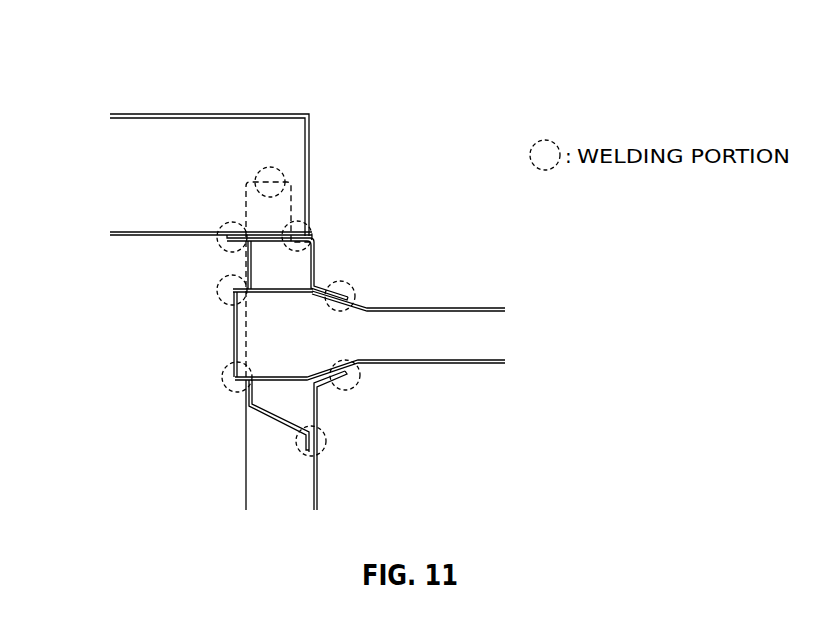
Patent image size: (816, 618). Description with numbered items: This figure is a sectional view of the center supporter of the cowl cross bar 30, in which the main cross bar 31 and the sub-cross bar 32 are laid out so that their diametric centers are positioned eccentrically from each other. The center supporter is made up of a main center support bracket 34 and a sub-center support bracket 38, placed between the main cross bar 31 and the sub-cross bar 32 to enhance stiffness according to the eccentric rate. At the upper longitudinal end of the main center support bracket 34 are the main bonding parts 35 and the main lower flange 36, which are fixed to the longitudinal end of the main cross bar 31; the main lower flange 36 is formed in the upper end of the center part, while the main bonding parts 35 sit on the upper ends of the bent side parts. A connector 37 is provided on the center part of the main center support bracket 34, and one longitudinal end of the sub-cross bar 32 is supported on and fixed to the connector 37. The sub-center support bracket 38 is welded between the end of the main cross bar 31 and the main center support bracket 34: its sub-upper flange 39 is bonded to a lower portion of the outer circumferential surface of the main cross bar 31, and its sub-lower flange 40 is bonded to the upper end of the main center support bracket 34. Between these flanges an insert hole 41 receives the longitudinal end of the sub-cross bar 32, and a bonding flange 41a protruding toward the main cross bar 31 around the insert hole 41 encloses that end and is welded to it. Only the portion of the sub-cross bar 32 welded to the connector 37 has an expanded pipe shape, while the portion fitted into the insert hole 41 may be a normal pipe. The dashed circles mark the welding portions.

The cowl cross bar 30 is at (103, 92).
The main cross bar 31 is at (167, 114).
The sub-cross bar 32 is at (455, 307).
The main center support bracket 34 is at (332, 471).
The main bonding parts 35 is at (286, 181).
The main lower flange 36 is at (299, 239).
The connector 37 is at (350, 385).
The sub-center support bracket 38 is at (228, 399).
The sub-upper flange 39 is at (229, 245).
The sub-lower flange 40 is at (297, 445).
The insert hole 41 is at (250, 294).
The bonding flange 41a is at (231, 281).